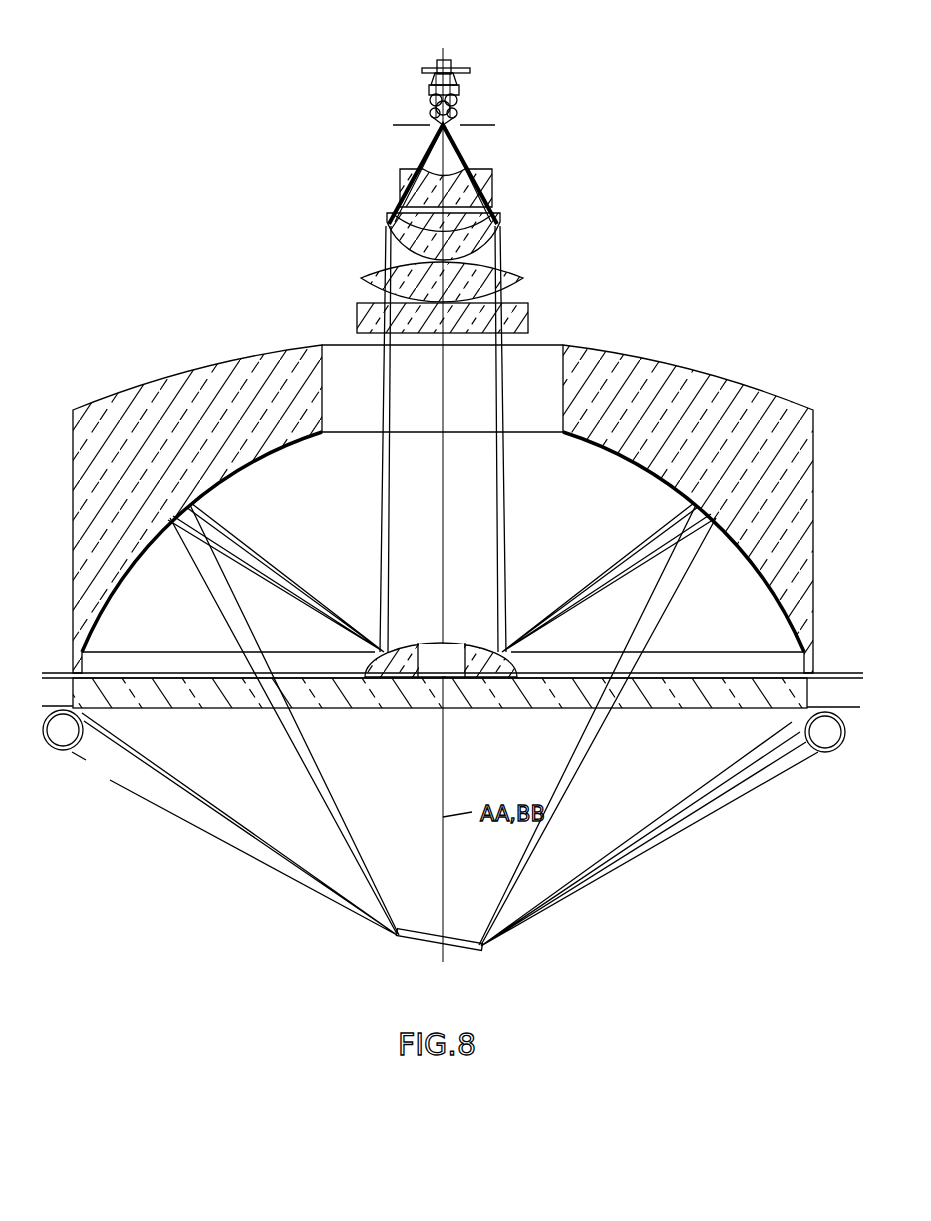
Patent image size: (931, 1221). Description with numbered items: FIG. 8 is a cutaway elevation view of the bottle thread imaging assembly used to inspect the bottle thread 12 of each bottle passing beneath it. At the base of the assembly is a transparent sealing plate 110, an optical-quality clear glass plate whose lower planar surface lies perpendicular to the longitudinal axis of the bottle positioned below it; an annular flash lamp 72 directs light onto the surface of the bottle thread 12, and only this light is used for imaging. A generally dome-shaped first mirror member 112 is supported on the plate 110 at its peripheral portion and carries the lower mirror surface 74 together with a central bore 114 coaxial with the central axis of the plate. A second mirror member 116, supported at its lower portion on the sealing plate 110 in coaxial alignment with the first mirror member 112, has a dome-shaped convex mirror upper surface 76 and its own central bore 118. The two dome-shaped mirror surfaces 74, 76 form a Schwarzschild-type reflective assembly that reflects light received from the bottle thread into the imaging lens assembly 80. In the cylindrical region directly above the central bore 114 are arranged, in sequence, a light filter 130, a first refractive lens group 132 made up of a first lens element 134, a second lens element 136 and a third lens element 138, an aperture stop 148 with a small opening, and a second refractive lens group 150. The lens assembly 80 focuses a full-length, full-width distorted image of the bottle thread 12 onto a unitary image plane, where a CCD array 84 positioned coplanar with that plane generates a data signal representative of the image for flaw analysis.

The bottle thread 12 is at (389, 938).
The annular flash lamp 72 is at (840, 755).
The concave mirror surface 74 is at (258, 462).
The convex mirror surface 76 is at (490, 650).
The imaging lens assembly 80 is at (542, 197).
The CCD array 84 is at (452, 48).
The transparent sealing plate 110 is at (107, 698).
The first mirror member 112 is at (698, 383).
The central bore 114 is at (535, 363).
The second mirror member 116 is at (507, 667).
The central bore 118 is at (427, 652).
The light filter 130 is at (530, 317).
The first refractive lens group 132 is at (346, 167).
The first lens element 134 is at (523, 273).
The second lens element 136 is at (500, 222).
The third lens element 138 is at (493, 183).
The aperture stop 148 is at (473, 123).
The second refractive lens group 150 is at (413, 120).